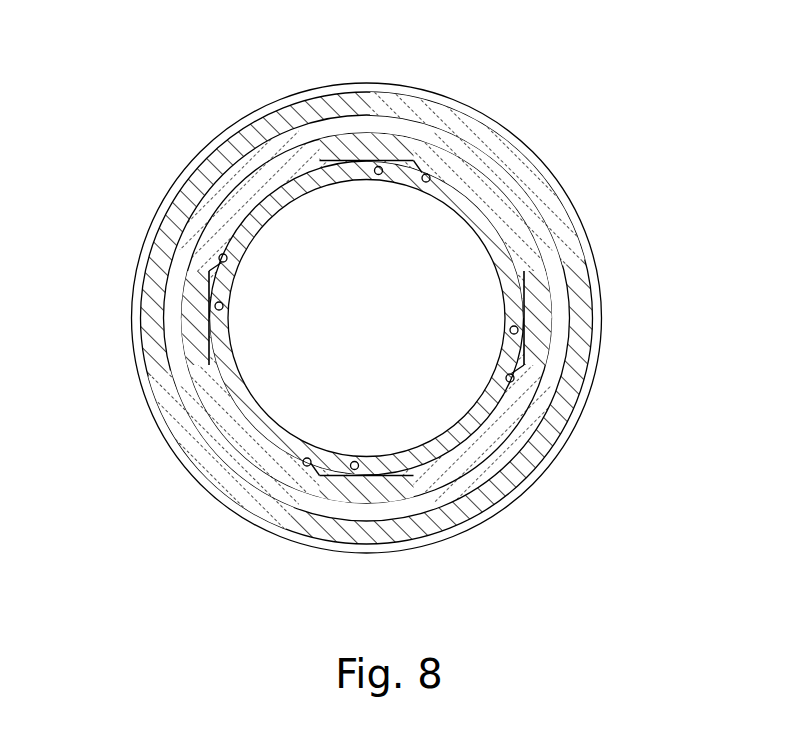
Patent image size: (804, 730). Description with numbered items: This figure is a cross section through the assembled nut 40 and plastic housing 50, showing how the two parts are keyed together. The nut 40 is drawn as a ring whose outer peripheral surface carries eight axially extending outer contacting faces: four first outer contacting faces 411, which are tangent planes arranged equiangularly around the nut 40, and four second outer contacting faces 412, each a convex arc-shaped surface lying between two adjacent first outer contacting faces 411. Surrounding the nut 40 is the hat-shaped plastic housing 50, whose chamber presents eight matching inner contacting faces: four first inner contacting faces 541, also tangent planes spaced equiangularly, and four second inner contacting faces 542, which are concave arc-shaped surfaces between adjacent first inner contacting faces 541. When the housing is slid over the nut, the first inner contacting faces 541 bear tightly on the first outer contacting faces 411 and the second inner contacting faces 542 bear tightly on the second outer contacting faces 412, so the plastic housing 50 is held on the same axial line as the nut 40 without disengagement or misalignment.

The nut 40 is at (508, 218).
The plastic housing 50 is at (506, 119).
The first outer contacting face 411 is at (353, 157).
The second outer contacting face 412 is at (222, 183).
The first inner contacting face 541 is at (378, 166).
The second inner contacting face 542 is at (430, 176).